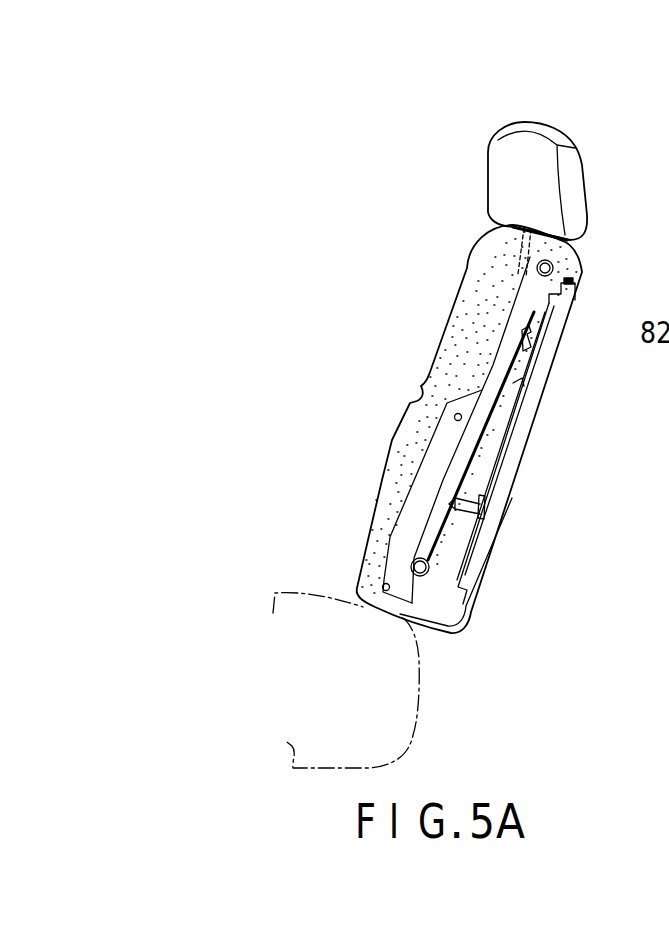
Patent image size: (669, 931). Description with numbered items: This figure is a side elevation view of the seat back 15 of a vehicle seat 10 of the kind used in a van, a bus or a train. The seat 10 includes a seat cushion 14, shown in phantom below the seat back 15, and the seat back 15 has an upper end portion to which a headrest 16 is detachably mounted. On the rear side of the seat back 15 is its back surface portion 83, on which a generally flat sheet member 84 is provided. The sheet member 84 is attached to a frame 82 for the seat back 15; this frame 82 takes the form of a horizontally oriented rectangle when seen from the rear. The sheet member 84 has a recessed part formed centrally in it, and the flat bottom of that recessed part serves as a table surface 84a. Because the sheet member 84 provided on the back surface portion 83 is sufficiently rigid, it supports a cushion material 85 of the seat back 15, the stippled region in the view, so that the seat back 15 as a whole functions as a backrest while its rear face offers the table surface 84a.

The seat 10 is at (293, 191).
The seat cushion 14 is at (298, 592).
The seat back 15 is at (462, 281).
The headrest 16 is at (512, 160).
The frame 82 is at (497, 372).
The back surface portion 83 is at (578, 273).
The sheet member 84 is at (505, 477).
The table surface 84a is at (512, 429).
The cushion material 85 is at (410, 437).